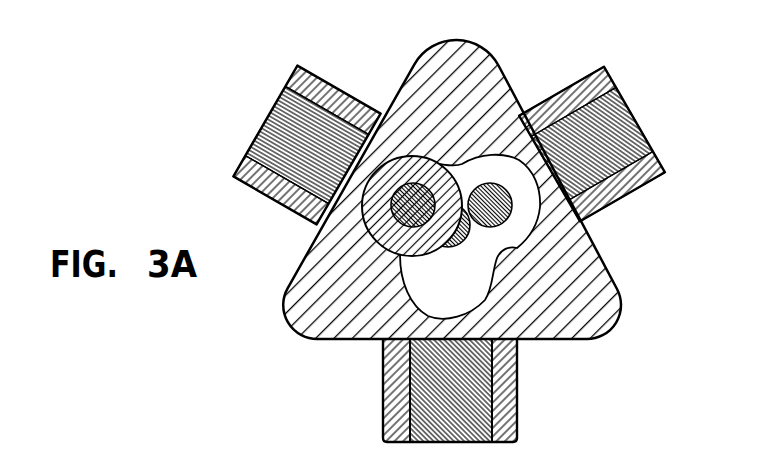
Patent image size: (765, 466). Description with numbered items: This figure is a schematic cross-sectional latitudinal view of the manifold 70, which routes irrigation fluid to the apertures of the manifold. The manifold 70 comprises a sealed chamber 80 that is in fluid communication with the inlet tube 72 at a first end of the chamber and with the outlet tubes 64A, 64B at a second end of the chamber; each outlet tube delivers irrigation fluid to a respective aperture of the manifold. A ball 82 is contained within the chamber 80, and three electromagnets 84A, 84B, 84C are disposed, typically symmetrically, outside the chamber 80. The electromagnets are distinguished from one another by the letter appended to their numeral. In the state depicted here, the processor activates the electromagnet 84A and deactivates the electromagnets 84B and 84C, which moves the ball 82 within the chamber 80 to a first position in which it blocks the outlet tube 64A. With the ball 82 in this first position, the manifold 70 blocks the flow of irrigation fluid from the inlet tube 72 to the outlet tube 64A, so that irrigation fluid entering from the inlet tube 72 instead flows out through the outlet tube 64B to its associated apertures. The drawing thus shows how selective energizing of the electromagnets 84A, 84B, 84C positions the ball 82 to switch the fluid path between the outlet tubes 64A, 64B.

The manifold 70 is at (268, 57).
The sealed chamber 80 is at (492, 300).
The inlet tube 72 is at (460, 250).
The ball 82 is at (416, 154).
The outlet tube 64A is at (370, 234).
The outlet tube 64B is at (513, 206).
The electromagnet 84A is at (270, 136).
The electromagnet 84B is at (630, 136).
The electromagnet 84C is at (447, 418).